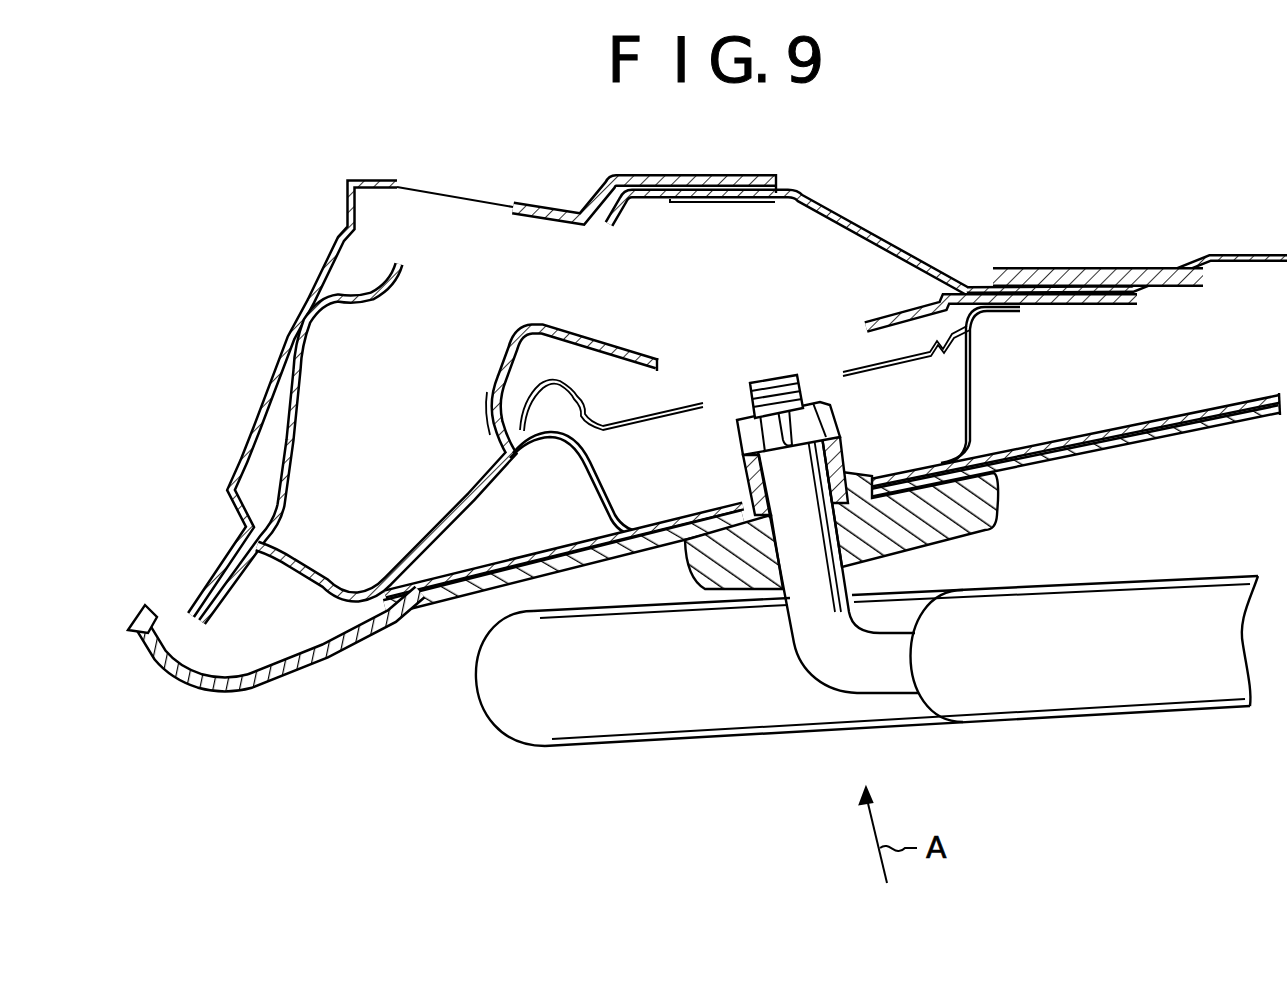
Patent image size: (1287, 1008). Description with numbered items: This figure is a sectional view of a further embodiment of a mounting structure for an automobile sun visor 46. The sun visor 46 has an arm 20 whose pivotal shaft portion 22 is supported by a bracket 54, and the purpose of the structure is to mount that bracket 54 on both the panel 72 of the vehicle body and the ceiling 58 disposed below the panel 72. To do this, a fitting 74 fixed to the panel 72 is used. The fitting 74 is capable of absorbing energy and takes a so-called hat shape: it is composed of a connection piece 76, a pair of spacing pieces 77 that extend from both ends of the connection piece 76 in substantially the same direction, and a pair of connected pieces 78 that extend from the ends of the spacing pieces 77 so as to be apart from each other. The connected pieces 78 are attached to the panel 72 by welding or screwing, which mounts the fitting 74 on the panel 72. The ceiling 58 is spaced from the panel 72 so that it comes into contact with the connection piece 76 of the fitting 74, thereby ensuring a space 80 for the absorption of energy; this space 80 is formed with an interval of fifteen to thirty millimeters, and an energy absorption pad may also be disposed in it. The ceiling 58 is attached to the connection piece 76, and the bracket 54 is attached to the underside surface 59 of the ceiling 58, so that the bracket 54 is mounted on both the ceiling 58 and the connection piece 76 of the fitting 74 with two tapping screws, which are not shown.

The arm 20 is at (880, 677).
The pivotal shaft portion 22 is at (807, 620).
The sun visor 46 is at (1110, 697).
The bracket 54 is at (975, 542).
The ceiling 58 is at (1113, 450).
The underside surface 59 is at (702, 548).
The panel 72 is at (1100, 307).
The fitting 74 is at (968, 381).
The connection piece 76 is at (672, 553).
The spacing pieces 77 is at (597, 477).
The connected pieces 78 is at (473, 493).
The space 80 is at (470, 545).